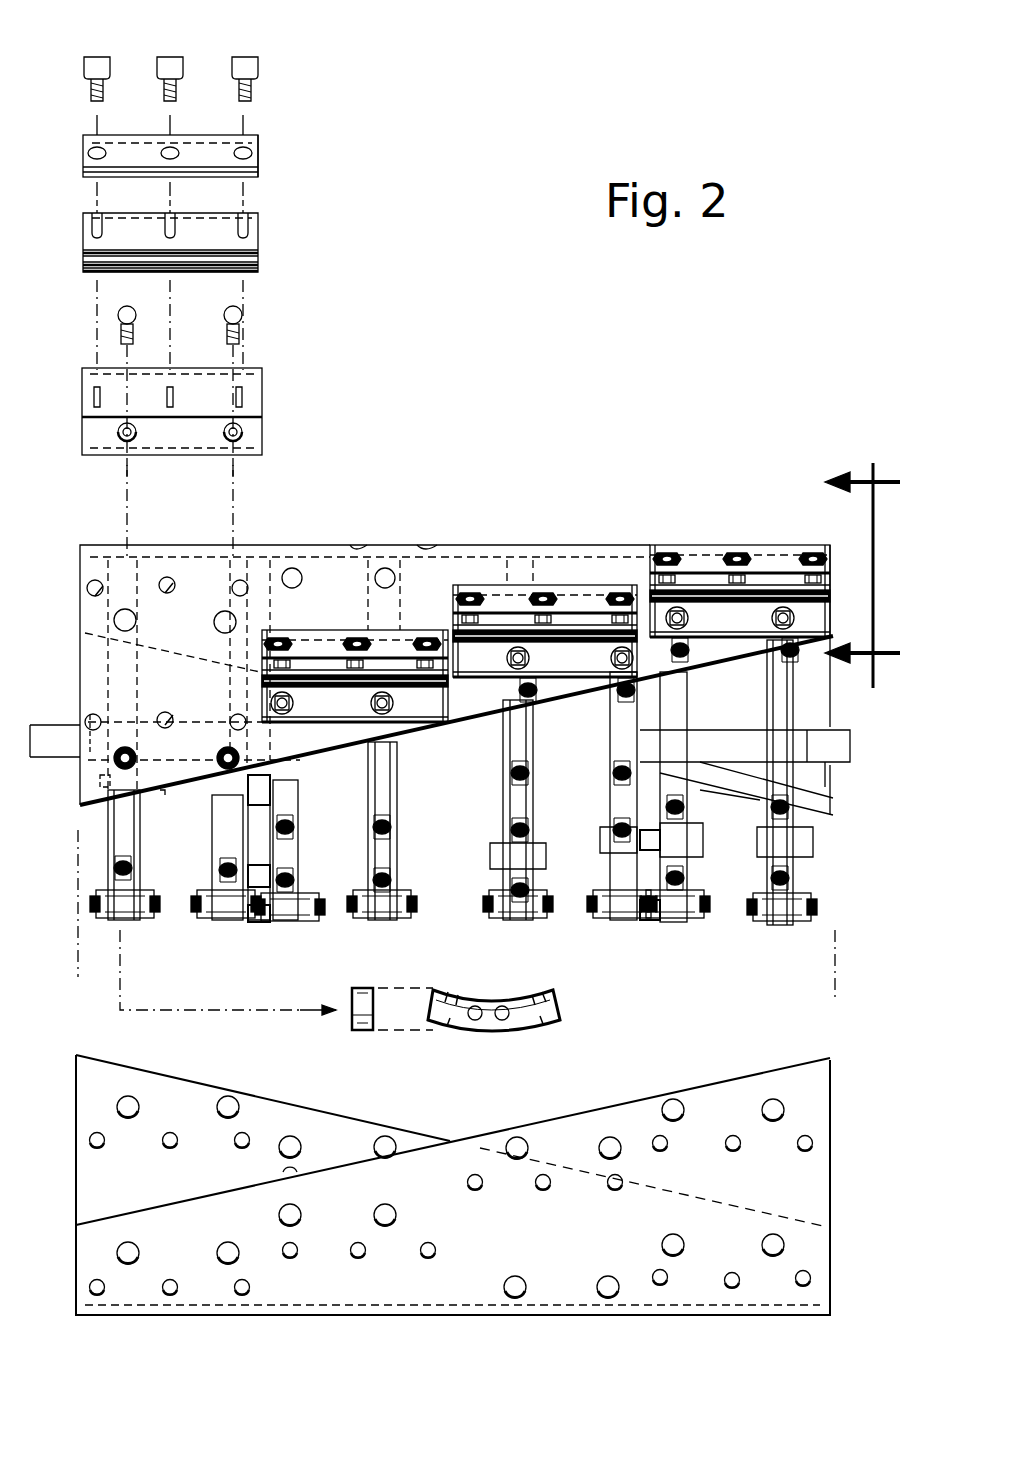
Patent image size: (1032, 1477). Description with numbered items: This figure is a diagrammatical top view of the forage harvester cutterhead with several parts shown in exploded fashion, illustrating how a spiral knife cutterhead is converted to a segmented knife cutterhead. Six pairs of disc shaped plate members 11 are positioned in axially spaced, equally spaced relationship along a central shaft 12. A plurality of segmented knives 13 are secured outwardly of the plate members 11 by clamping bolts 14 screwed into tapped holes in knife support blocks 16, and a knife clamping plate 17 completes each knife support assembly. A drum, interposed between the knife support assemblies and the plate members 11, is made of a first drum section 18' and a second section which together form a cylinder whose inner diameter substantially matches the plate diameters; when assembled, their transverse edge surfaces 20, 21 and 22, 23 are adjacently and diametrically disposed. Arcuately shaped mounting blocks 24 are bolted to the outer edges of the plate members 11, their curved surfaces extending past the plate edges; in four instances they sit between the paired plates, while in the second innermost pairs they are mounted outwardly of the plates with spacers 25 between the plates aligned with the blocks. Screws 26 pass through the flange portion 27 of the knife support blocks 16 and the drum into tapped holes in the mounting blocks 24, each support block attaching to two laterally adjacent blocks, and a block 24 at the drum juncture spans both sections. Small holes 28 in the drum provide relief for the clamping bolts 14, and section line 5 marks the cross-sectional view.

The section line 5- 5 is at (862, 567).
The disc shaped plate members 11 is at (135, 822).
The central shaft 12 is at (828, 750).
The segmented knives 13 is at (258, 235).
The clamping bolts 14 is at (190, 64).
The knife support blocks 16 is at (265, 390).
The knife clamping plate 17 is at (253, 155).
The first drum section 18' is at (486, 1185).
The transverse edge surface 20 is at (165, 797).
The transverse edge surface 21 is at (740, 752).
The transverse edge surface 22 is at (705, 1085).
The transverse edge surface 23 is at (255, 1092).
The arcuately shaped mounting blocks 24 is at (285, 815).
The spacers 25 is at (250, 820).
The screws 26 is at (123, 335).
The flange portion 27 is at (265, 434).
The small holes 28 is at (168, 585).